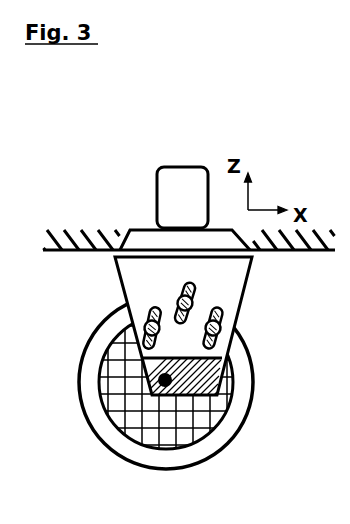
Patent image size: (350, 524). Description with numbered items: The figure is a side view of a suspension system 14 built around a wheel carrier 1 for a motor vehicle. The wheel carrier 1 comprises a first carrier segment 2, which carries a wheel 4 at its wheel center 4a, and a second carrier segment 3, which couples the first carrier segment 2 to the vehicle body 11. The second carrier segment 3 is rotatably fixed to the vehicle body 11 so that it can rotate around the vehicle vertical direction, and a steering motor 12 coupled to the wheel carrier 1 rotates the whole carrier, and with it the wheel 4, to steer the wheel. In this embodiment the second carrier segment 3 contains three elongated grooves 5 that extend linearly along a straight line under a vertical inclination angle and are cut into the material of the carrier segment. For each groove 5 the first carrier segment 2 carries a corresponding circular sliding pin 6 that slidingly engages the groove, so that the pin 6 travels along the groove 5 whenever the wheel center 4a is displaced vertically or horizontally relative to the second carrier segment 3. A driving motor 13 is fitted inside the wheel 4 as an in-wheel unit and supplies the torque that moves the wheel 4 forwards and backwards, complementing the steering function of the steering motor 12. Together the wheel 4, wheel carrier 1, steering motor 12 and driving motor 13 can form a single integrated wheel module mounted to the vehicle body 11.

The wheel carrier 1 is at (288, 325).
The first carrier segment 2 is at (220, 390).
The second carrier segment 3 is at (237, 277).
The wheel 4 is at (227, 428).
The wheel center 4a is at (167, 395).
The elongated grooves 5 is at (140, 306).
The sliding pin 6 is at (222, 330).
The vehicle body 11 is at (72, 232).
The steering motor 12 is at (155, 208).
The driving motor 13 is at (120, 415).
The suspension system 14 is at (243, 112).